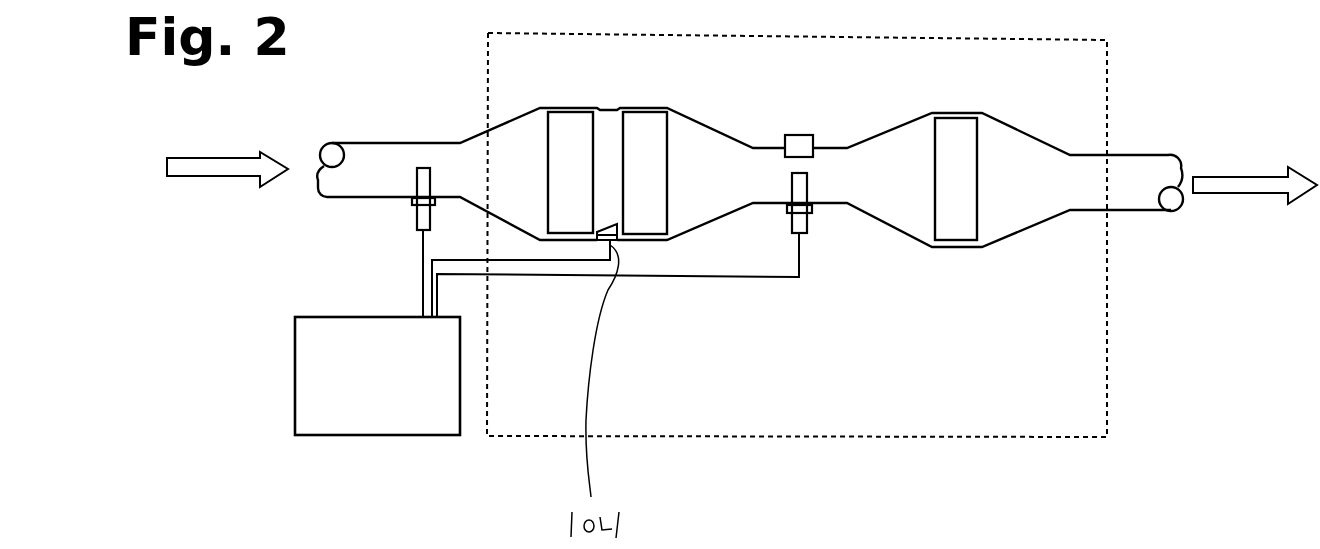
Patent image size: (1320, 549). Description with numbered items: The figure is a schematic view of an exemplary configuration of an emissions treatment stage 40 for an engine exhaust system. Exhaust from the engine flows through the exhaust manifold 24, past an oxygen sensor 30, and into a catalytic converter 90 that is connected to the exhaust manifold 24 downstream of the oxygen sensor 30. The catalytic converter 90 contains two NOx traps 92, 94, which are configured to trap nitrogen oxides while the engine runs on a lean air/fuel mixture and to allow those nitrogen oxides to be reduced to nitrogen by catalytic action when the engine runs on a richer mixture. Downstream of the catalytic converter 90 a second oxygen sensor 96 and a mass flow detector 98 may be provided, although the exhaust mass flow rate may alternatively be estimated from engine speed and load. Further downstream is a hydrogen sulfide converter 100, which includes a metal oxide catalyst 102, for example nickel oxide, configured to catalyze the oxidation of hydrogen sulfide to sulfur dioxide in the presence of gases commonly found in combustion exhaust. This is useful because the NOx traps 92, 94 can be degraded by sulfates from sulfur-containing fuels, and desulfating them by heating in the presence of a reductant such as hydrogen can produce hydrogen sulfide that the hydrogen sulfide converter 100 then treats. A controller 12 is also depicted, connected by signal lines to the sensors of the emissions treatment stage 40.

The controller 12 is at (443, 357).
The exhaust manifold 24 is at (422, 143).
The oxygen sensor 30 is at (415, 216).
The emissions treatment stage 40 is at (1108, 90).
The catalytic converter 90 is at (613, 87).
The NOx trap 92 is at (568, 110).
The NOx trap 94 is at (653, 110).
The second oxygen sensor 96 is at (807, 222).
The mass flow detector 98 is at (798, 135).
The hydrogen sulfide converter 100 is at (968, 95).
The metal oxide catalyst 102 is at (978, 193).